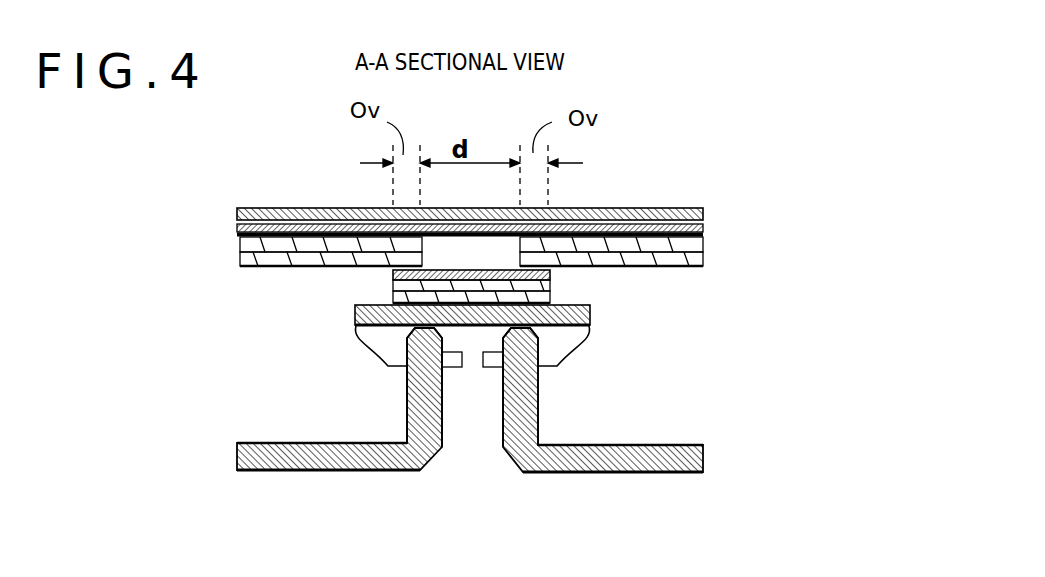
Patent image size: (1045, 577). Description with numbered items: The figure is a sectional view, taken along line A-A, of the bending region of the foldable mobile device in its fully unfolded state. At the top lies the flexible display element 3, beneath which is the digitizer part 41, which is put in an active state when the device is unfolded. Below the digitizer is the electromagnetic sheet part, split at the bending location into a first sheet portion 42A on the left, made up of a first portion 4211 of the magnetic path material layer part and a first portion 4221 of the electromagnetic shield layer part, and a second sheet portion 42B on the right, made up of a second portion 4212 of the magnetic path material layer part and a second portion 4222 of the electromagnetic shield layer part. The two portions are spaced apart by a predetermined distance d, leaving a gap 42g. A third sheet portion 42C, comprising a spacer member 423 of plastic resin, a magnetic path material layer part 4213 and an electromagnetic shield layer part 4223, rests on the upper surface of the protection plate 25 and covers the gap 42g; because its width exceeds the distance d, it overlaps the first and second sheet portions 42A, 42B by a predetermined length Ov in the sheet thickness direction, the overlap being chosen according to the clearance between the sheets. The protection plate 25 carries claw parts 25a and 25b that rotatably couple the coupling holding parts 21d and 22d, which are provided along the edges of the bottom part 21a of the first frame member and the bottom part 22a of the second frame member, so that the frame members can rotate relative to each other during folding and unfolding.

The flexible display element 3 is at (703, 217).
The digitizer part 41 is at (240, 230).
The first sheet portion 42A is at (226, 282).
The first portion of the magnetic path material layer part 4211 is at (240, 244).
The first portion of the electromagnetic shield layer part 4221 is at (240, 258).
The second sheet portion 42B is at (721, 284).
The second portion of the magnetic path material layer part 4212 is at (703, 243).
The second portion of the electromagnetic shield layer part 4222 is at (703, 260).
The gap 42g is at (493, 258).
The third sheet portion 42C is at (656, 371).
The spacer member 423 is at (552, 273).
The magnetic path material layer part 4213 is at (552, 285).
The electromagnetic shield layer part 4223 is at (590, 307).
The protection plate 25 is at (354, 316).
The claw part 25a is at (380, 343).
The claw part 25b is at (565, 347).
The bottom part of the first frame member 21a is at (355, 455).
The coupling holding part 21d is at (445, 440).
The bottom part of the second frame member 22a is at (623, 460).
The coupling holding part 22d is at (503, 427).